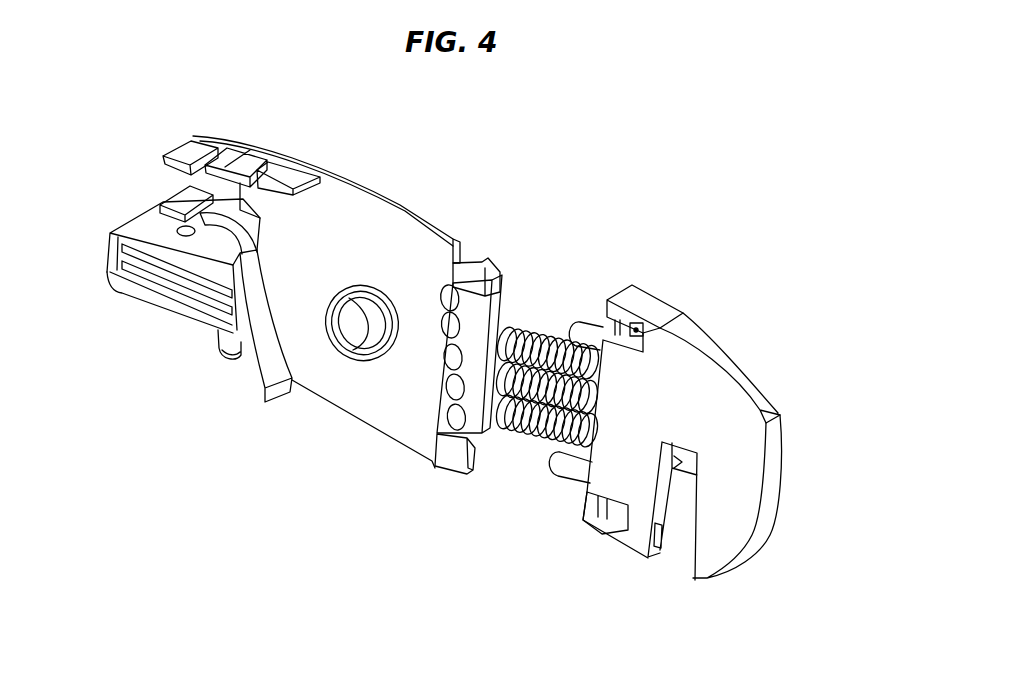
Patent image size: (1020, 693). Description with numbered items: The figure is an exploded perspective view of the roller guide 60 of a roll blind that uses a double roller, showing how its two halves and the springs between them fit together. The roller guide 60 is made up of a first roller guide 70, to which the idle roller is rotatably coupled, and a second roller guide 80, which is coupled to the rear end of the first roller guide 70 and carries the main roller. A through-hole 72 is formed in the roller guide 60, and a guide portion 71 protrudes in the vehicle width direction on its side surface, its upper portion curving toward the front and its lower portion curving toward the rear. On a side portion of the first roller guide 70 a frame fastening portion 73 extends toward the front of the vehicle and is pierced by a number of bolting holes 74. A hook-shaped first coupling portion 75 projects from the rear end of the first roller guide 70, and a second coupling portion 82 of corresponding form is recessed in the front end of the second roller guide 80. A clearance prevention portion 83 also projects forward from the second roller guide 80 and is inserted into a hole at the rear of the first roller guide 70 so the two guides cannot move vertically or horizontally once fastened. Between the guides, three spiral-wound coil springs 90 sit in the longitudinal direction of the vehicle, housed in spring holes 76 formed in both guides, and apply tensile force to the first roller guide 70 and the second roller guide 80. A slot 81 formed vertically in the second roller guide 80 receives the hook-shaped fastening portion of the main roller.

The roller guide 60 is at (727, 200).
The first roller guide 70 is at (383, 188).
The guide portion 71 is at (248, 365).
The through-hole 72 is at (358, 335).
The frame fastening portion 73 is at (148, 227).
The bolting holes 74 is at (184, 231).
The first coupling portion 75 is at (465, 277).
The spring holes 76 is at (458, 322).
The second roller guide 80 is at (731, 357).
The slot 81 is at (683, 528).
The second coupling portion 82 is at (637, 330).
The clearance prevention portion 83 is at (583, 333).
The springs 90 is at (522, 433).